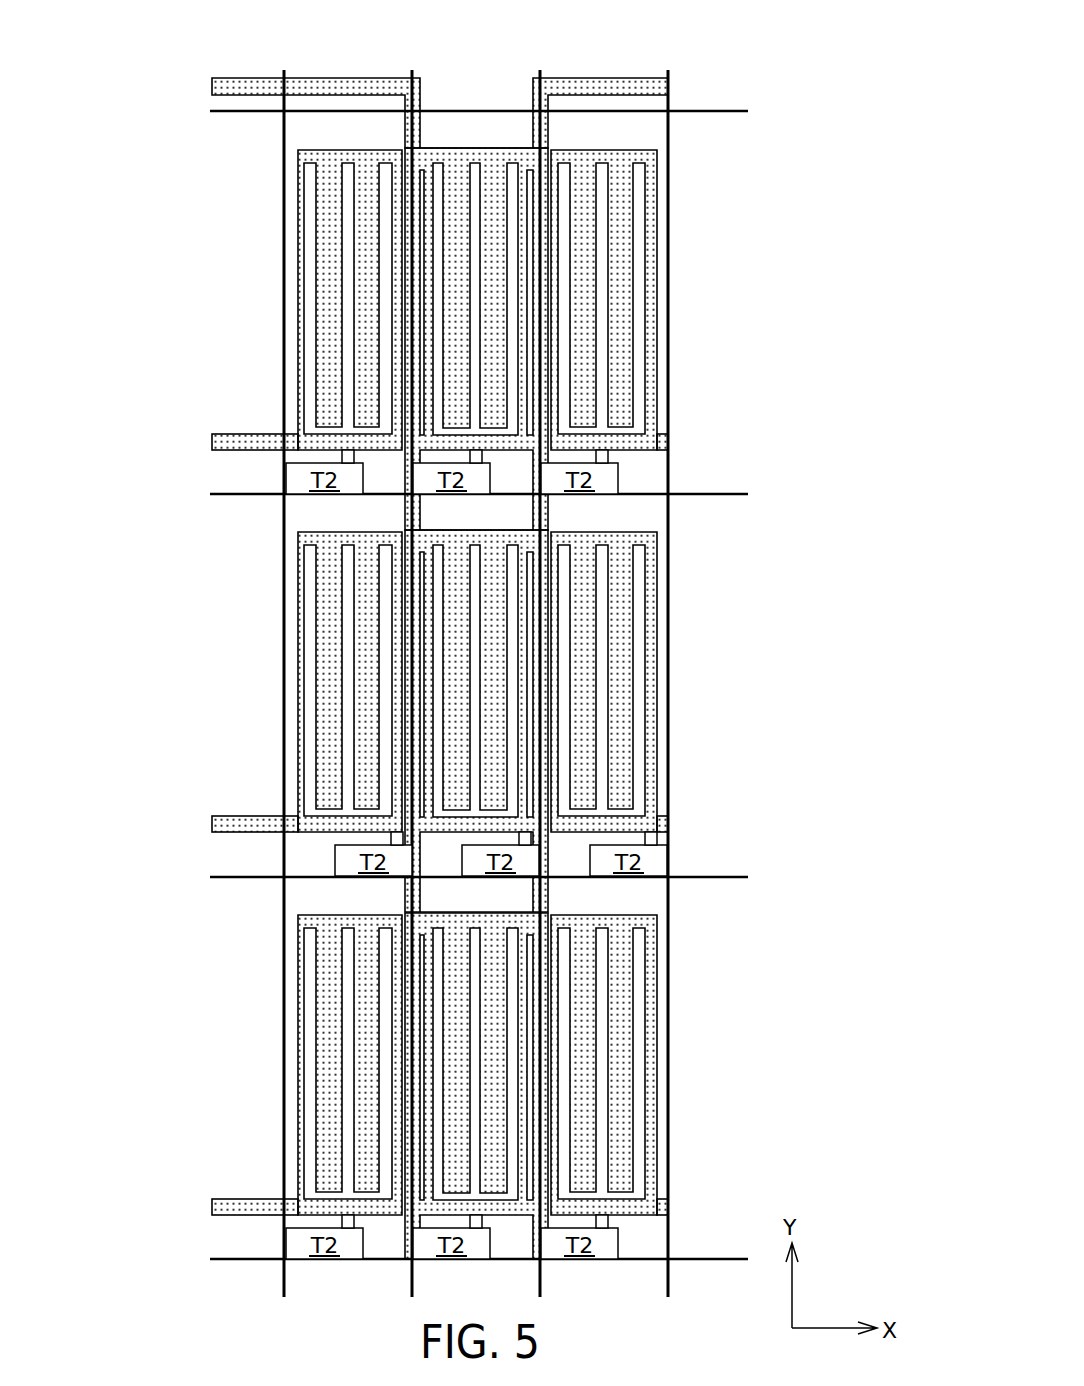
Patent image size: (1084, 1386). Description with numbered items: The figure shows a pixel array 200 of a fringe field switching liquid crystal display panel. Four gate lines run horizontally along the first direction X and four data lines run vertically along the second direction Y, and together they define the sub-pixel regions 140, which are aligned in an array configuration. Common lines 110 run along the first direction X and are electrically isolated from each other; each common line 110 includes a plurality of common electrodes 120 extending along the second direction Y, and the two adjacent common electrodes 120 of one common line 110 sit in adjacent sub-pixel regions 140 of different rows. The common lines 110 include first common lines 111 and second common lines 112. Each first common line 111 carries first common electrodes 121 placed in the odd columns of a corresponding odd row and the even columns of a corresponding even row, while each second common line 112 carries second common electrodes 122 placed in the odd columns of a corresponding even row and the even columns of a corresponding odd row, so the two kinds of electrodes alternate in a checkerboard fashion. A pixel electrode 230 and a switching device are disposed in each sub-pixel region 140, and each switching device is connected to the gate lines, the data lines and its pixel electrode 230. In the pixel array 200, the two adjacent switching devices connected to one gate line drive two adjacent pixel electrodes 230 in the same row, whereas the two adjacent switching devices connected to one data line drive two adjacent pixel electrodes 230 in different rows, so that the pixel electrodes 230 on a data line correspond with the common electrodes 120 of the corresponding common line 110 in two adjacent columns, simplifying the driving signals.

The common line 110 is at (380, 631).
The first common line 111 is at (223, 441).
The second common line 112 is at (223, 84).
The common electrode 120 is at (486, 701).
The first common electrode 121 is at (299, 151).
The second common electrode 122 is at (493, 412).
The sub-pixel region 140 is at (658, 474).
The pixel array 200 is at (772, 67).
The pixel electrode 230 is at (486, 701).